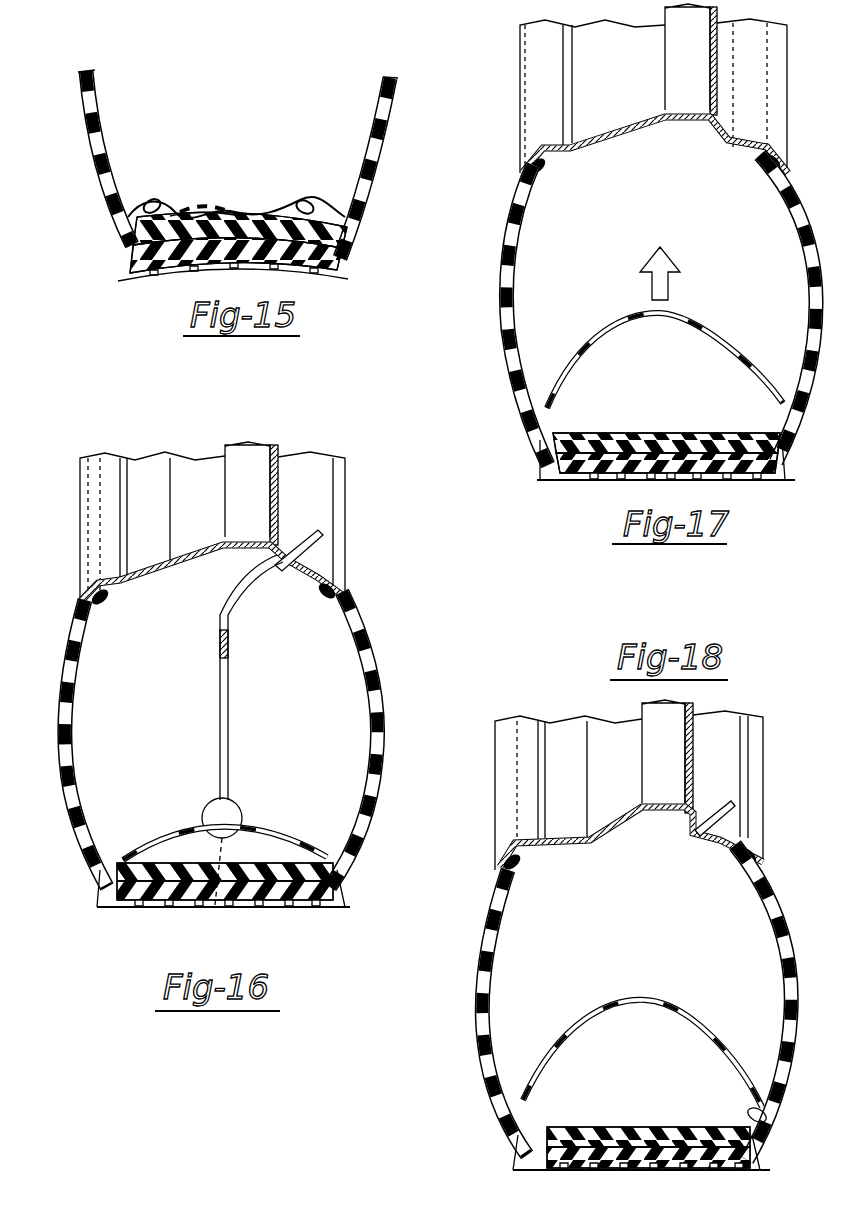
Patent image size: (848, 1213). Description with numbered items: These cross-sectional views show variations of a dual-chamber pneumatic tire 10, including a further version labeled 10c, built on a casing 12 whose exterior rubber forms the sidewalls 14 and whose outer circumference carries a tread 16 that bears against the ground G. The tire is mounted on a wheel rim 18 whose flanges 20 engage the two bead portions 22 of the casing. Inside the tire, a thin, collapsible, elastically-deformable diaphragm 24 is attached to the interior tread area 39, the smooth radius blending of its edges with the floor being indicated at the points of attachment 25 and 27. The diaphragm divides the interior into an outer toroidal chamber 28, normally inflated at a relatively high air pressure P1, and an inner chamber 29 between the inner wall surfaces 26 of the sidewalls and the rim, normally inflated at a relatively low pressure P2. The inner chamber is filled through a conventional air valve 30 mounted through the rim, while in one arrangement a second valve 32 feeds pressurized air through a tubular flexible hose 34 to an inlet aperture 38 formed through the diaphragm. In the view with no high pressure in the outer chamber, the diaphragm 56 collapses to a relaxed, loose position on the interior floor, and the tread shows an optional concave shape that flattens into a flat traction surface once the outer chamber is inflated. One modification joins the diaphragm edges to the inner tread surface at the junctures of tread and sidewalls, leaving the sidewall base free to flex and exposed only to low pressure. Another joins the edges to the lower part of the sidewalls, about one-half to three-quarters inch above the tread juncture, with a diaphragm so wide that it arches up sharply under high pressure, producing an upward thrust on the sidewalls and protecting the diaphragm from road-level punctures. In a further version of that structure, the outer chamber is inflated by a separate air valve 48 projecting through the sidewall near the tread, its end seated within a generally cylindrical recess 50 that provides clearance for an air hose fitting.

In FIG. 16, the pneumatic tire 10 is at (53, 818).
In FIG. 18, the tire assembly (alternate embodiment) 10c is at (475, 1087).
In FIG. 16, the casing 12 is at (82, 678).
In FIG. 18, the casing 12 is at (510, 923).
In FIG. 15, the sidewalls 14 is at (76, 96).
In FIG. 17, the sidewalls 14 is at (497, 318).
In FIG. 16, the sidewalls 14 is at (57, 733).
In FIG. 18, the sidewalls 14 is at (477, 957).
In FIG. 15, the tread 16 is at (127, 253).
In FIG. 17, the tread 16 is at (666, 456).
In FIG. 16, the tread 16 is at (107, 892).
In FIG. 18, the tread 16 is at (523, 1150).
In FIG. 17, the wheel rim 18 is at (653, 88).
In FIG. 16, the wheel rim 18 is at (207, 568).
In FIG. 18, the wheel rim 18 is at (629, 785).
In FIG. 17, the flanges 20 is at (655, 145).
In FIG. 16, the flanges 20 is at (97, 592).
In FIG. 18, the flanges 20 is at (503, 857).
In FIG. 17, the bead portions 22 is at (654, 163).
In FIG. 16, the bead portions 22 is at (110, 597).
In FIG. 18, the bead portions 22 is at (528, 860).
In FIG. 15, the diaphragm 24 is at (225, 207).
In FIG. 17, the diaphragm 24 is at (638, 318).
In FIG. 16, the diaphragm 24 is at (260, 827).
In FIG. 18, the diaphragm 24 is at (642, 1053).
In FIG. 15, the point of attachment 25 is at (160, 198).
In FIG. 17, the point of attachment 25 is at (543, 407).
In FIG. 16, the point of attachment 25 is at (120, 860).
In FIG. 18, the point of attachment 25 is at (518, 1097).
In FIG. 17, the inner wall surfaces of the sidewalls 26 is at (520, 300).
In FIG. 16, the inner wall surfaces of the sidewalls 26 is at (77, 753).
In FIG. 18, the inner wall surfaces of the sidewalls 26 is at (767, 928).
In FIG. 17, the point of attachment 27 is at (550, 412).
In FIG. 16, the point of attachment 27 is at (167, 897).
In FIG. 18, the point of attachment 27 is at (523, 1100).
In FIG. 17, the outer chamber 28 is at (658, 368).
In FIG. 16, the outer chamber 28 is at (287, 847).
In FIG. 17, the inner chamber 29 is at (719, 234).
In FIG. 16, the inner chamber 29 is at (192, 732).
In FIG. 18, the air valve 30 is at (713, 803).
In FIG. 16, the second valve 32 is at (297, 536).
In FIG. 16, the tubular flexible hose 34 is at (222, 685).
In FIG. 16, the inlet aperture 38 is at (210, 897).
In FIG. 15, the interior tread area 39 is at (182, 217).
In FIG. 17, the interior tread area 39 is at (694, 435).
In FIG. 16, the interior tread area 39 is at (222, 860).
In FIG. 18, the interior tread area 39 is at (610, 1127).
In FIG. 18, the air valve 48 is at (767, 1127).
In FIG. 18, the recess 50 is at (767, 1113).
In FIG. 15, the diaphragm 56 is at (213, 195).
In FIG. 15, the ground G is at (345, 279).
In FIG. 18, the ground G is at (767, 1170).
In FIG. 17, the high air pressure P1 is at (675, 377).
In FIG. 16, the high air pressure P1 is at (258, 850).
In FIG. 18, the high air pressure P1 is at (635, 1031).
In FIG. 17, the low pressure P2 is at (621, 210).
In FIG. 16, the low pressure P2 is at (260, 660).
In FIG. 18, the low pressure P2 is at (640, 893).